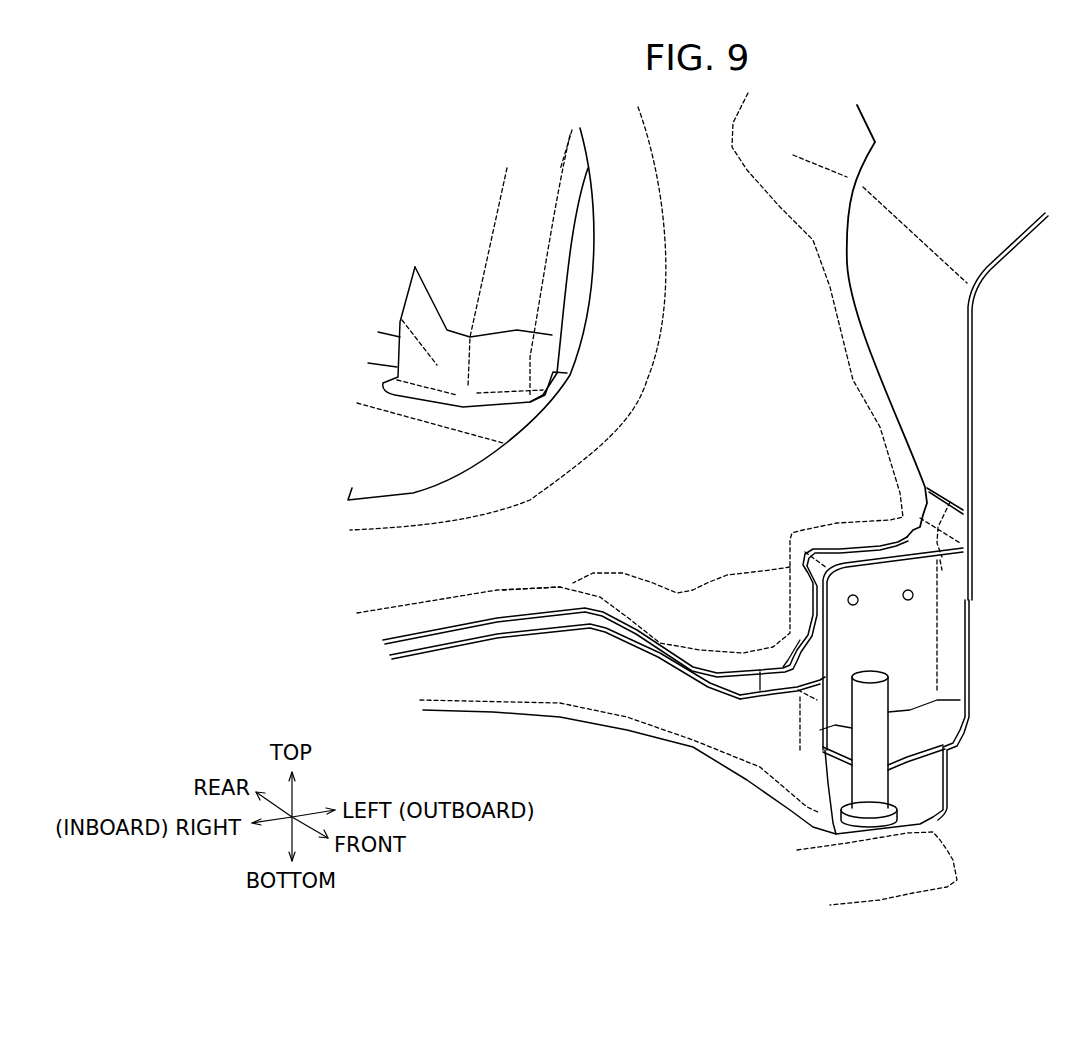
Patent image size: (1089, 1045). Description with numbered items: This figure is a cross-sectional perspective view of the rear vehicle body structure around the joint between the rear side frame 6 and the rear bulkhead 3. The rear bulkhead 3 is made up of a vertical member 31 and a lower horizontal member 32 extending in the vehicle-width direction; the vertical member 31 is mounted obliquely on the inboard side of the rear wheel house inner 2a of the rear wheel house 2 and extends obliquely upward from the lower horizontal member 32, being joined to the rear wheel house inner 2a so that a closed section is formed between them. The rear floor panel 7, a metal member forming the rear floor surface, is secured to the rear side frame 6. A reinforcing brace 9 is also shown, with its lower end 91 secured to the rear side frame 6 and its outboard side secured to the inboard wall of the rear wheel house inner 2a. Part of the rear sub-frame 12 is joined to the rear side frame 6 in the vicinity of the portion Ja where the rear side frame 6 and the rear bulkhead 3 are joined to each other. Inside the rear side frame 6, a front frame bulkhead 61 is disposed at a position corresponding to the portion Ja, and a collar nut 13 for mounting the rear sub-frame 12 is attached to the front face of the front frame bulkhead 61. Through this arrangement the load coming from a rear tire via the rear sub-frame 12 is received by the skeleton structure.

The reinforcing brace 9 is at (513, 247).
The lower end of reinforcing brace 91 is at (402, 320).
The vertical member 31 is at (840, 367).
The rear bulkhead 3 is at (913, 452).
The rear wheel house inner 2a is at (973, 397).
The side sill 2 is at (1028, 406).
The rear side frame 6 is at (950, 502).
The front frame bulkhead 61 is at (920, 627).
The collar nut 13 is at (893, 692).
The rear sub-frame 12 is at (953, 850).
The lower horizontal member 32 is at (478, 557).
The rear floor panel 7 is at (688, 665).
The joined portion Ja is at (798, 682).